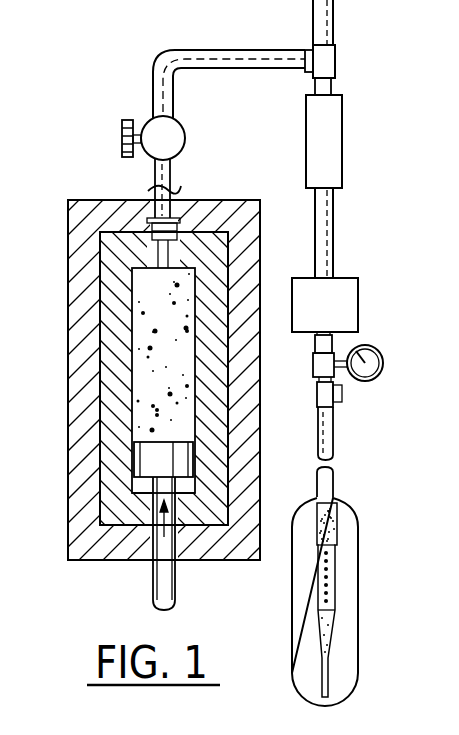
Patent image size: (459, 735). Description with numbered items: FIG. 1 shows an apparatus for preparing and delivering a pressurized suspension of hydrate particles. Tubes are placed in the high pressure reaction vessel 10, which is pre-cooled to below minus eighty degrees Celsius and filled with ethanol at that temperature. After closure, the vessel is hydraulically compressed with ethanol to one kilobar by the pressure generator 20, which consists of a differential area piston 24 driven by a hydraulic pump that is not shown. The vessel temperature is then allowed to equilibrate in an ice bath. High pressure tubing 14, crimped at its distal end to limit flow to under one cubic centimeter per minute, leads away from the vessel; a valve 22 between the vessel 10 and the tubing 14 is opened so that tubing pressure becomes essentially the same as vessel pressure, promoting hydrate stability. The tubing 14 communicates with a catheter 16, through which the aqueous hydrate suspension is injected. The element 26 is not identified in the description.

The high pressure reaction vessel 10 is at (78, 172).
The high pressure tubing 14 is at (222, 50).
The catheter 16 is at (328, 652).
The pressure generator 20 is at (153, 590).
The valve 22 is at (185, 133).
The differential area piston 24 is at (133, 453).
The restrictor housing 26 is at (342, 155).